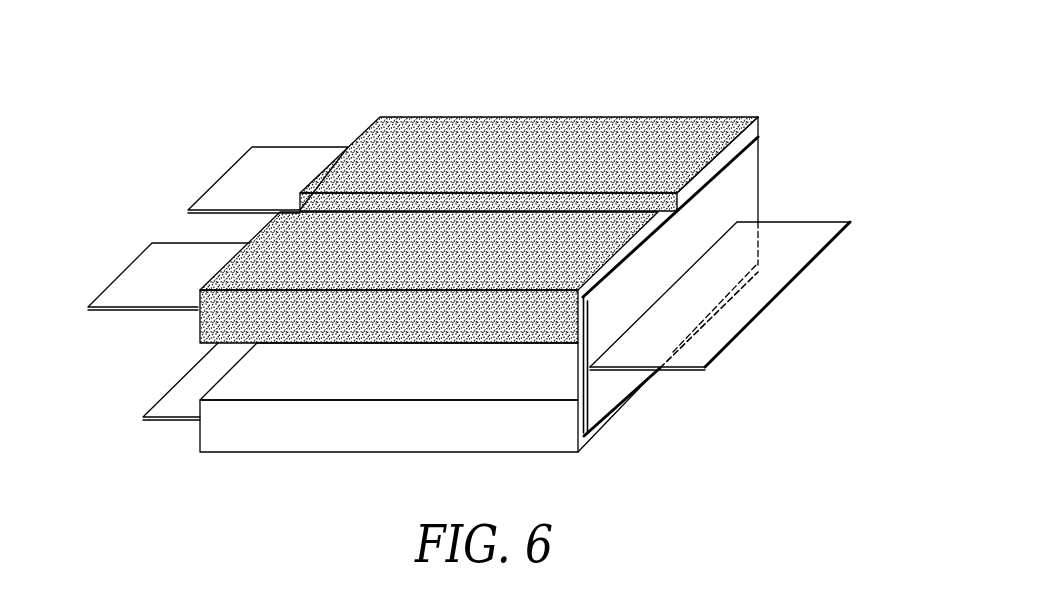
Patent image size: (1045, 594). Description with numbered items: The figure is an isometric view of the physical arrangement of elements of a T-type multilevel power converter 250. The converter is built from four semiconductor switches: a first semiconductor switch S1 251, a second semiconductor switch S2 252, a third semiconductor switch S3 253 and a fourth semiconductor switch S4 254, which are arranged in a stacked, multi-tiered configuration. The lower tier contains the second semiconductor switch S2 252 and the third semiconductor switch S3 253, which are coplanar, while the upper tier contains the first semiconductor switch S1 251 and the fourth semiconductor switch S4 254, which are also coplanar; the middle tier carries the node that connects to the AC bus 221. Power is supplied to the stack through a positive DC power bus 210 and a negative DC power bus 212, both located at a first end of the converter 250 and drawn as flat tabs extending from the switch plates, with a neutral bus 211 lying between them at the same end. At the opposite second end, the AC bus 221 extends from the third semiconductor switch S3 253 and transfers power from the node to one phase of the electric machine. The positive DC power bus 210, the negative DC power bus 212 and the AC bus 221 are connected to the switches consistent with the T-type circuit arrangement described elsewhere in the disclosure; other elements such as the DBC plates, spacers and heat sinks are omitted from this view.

The T-type multilevel power converter 250 is at (490, 250).
The first semiconductor switch S1 251 is at (566, 136).
The second semiconductor switch S2 252 is at (230, 428).
The third semiconductor switch S3 253 is at (765, 267).
The fourth semiconductor switch S4 254 is at (245, 323).
The positive DC power bus 210 is at (276, 163).
The neutral bus 211 is at (167, 408).
The negative DC power bus 212 is at (180, 262).
The AC bus 221 is at (801, 238).